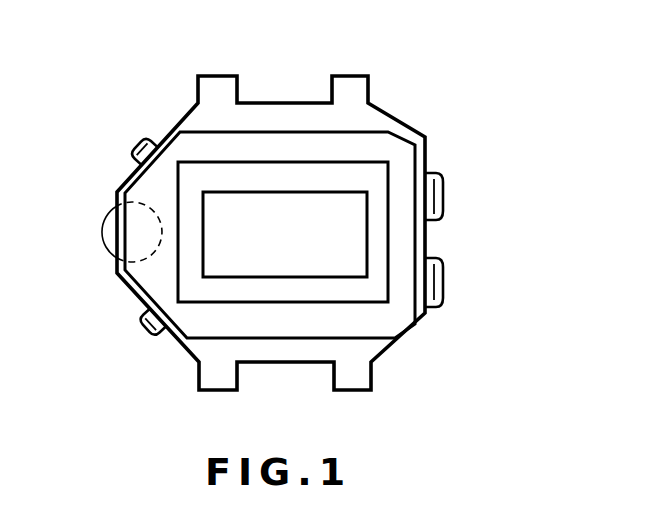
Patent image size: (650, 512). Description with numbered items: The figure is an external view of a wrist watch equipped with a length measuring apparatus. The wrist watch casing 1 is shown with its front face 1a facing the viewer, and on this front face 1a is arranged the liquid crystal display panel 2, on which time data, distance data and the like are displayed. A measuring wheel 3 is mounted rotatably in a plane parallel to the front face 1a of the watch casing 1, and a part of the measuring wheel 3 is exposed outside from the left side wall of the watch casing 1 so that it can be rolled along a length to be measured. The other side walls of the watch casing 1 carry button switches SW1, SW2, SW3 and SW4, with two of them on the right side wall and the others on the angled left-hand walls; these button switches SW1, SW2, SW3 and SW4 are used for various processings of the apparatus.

The wrist watch casing 1 is at (357, 98).
The front face 1a is at (395, 148).
The liquid crystal display panel 2 is at (283, 212).
The measuring wheel 3 is at (105, 226).
The button switch SW1 is at (148, 335).
The button switch SW2 is at (445, 287).
The button switch SW3 is at (445, 203).
The button switch SW4 is at (135, 145).